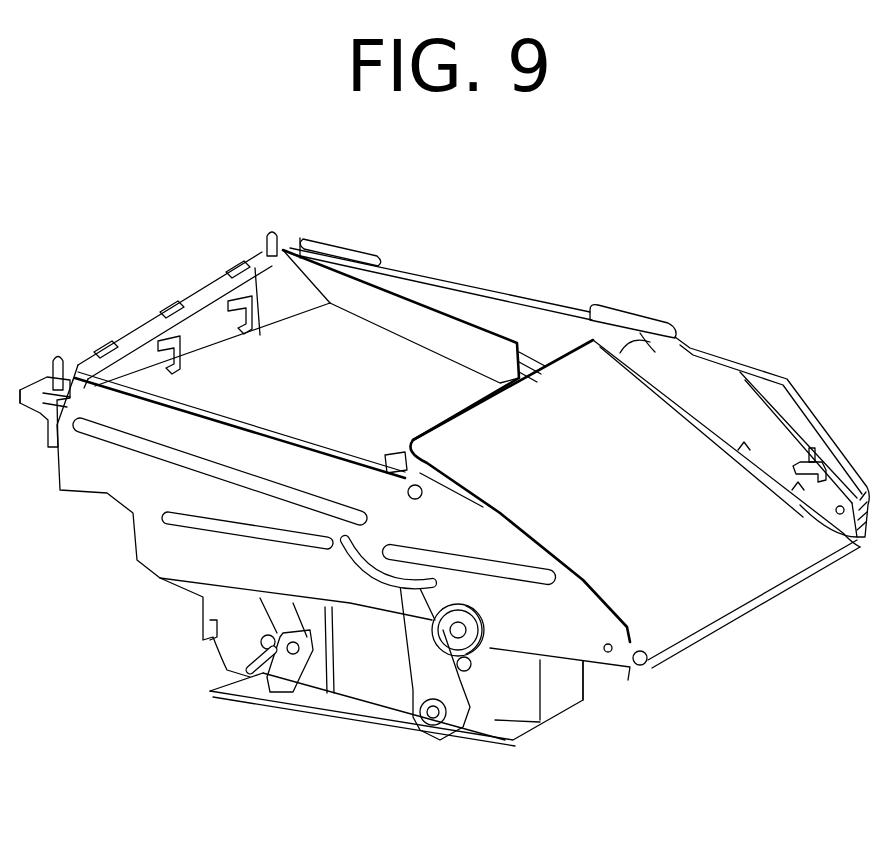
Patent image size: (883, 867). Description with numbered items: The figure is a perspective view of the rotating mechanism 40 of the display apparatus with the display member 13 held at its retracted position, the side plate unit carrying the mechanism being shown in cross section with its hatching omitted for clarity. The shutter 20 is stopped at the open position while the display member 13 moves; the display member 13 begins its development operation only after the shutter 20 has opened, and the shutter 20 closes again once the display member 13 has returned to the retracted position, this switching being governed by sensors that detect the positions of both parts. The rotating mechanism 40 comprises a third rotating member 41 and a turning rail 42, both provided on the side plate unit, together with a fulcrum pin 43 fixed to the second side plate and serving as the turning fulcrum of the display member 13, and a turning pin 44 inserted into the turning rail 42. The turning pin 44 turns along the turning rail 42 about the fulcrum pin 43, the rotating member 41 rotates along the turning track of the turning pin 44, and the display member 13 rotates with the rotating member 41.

The display member 13 is at (403, 360).
The shutter 20 is at (567, 373).
The rotating mechanism 40 is at (432, 661).
The third rotating member 41 is at (395, 585).
The turning rail 42 is at (365, 552).
The fulcrum pin 43 is at (408, 502).
The turning pin 44 is at (445, 642).